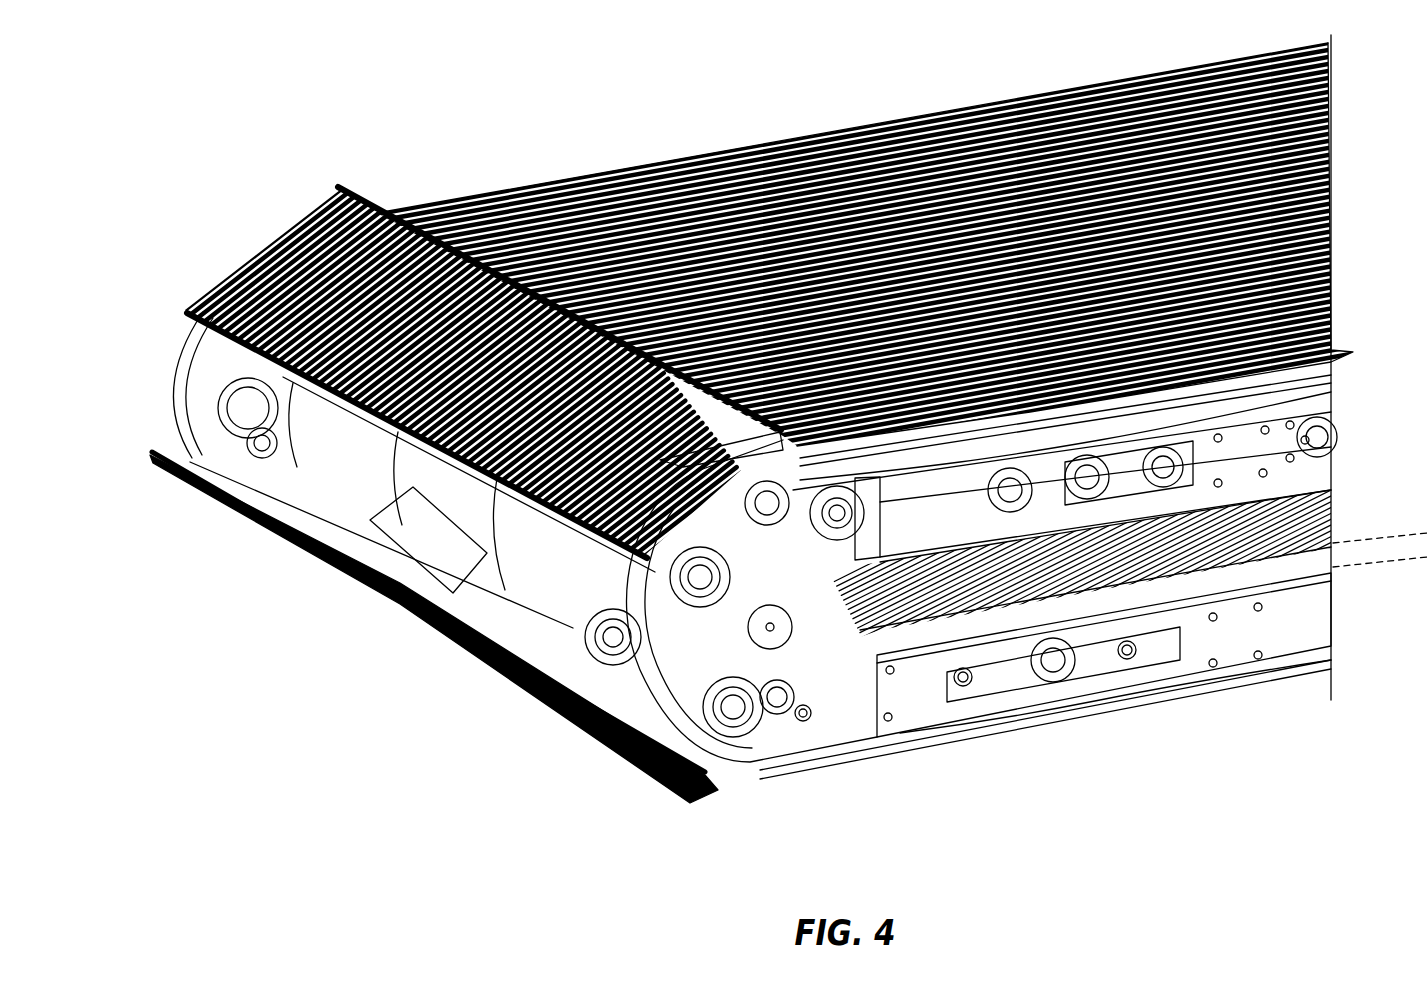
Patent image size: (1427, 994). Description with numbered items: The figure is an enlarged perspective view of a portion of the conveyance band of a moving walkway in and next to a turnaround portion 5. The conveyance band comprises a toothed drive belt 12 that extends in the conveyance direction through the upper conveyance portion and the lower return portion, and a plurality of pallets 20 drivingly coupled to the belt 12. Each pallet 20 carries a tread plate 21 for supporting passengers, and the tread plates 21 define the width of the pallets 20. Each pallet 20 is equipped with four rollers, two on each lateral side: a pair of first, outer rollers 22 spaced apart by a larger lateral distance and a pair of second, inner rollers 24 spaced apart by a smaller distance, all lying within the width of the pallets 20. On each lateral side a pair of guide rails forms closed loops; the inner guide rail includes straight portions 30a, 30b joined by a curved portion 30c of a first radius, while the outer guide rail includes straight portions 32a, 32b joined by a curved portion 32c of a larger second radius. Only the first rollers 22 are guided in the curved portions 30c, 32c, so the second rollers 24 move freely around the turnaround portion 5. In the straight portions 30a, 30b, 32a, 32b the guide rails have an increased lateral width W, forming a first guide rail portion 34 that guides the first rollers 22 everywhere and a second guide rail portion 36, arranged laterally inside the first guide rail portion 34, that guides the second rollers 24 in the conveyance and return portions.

The turnaround portion 5 is at (154, 181).
The drive belt 12 is at (980, 590).
The pallet 20 is at (290, 185).
The tread plate 21 is at (256, 245).
The first roller 22 is at (222, 360).
The second roller 24 is at (203, 420).
The straight portion of first guide rail 30a is at (899, 537).
The straight portion of first guide rail 30b is at (840, 660).
The curved portion of first guide rail 30c is at (267, 397).
The straight portion of second guide rail 32a is at (898, 496).
The straight portion of second guide rail 32b is at (790, 740).
The curved portion of second guide rail 32c is at (190, 372).
The first guide rail portion 34 is at (1340, 576).
The second guide rail portion 36 is at (1335, 543).